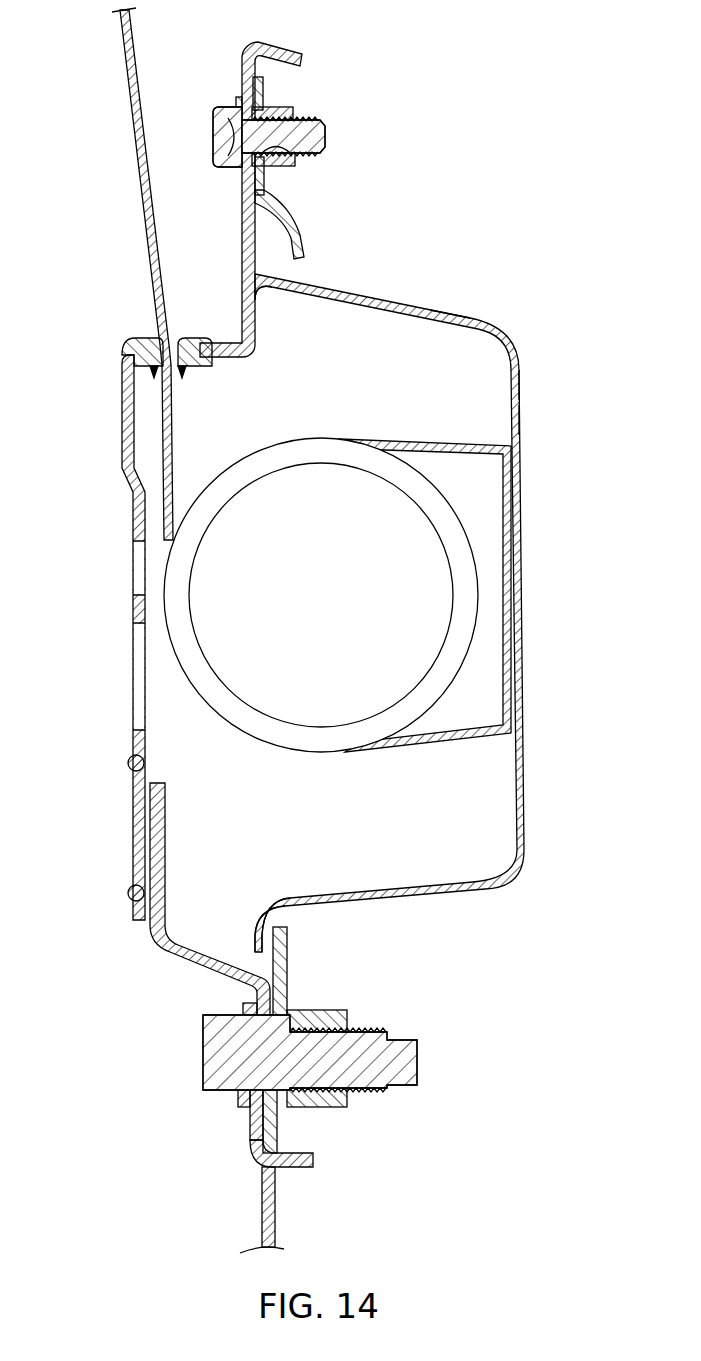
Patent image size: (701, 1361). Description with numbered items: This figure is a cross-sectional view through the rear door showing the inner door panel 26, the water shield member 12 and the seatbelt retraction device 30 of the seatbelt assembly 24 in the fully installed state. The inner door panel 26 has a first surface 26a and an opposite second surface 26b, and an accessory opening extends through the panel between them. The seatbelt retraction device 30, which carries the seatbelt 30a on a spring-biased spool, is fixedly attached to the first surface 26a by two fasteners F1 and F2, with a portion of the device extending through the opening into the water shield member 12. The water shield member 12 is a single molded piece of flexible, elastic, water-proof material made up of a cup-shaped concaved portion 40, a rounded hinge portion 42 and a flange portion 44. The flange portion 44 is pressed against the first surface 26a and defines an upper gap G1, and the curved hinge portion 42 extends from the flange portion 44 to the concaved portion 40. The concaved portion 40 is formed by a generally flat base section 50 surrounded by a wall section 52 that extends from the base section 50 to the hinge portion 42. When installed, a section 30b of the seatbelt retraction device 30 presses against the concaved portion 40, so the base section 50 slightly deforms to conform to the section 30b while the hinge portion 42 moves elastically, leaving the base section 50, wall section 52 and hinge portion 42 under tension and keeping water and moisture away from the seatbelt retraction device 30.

The water shield member 12 is at (407, 305).
The seatbelt assembly 24 is at (122, 414).
The inner door panel 26 is at (297, 233).
The first surface 26a is at (234, 106).
The second surface 26b is at (264, 89).
The seatbelt retraction device 30 is at (238, 713).
The seatbelt 30a is at (145, 213).
The section of the seatbelt retraction device 30b is at (505, 650).
The cup-shaped concaved portion 40 is at (520, 384).
The hinge portion 42 is at (267, 283).
The flange portion 44 is at (256, 951).
The base section 50 is at (520, 418).
The wall section 52 is at (450, 317).
The fastener F1 is at (228, 165).
The upper gap G1 is at (300, 157).
The fastener F2 is at (230, 1052).